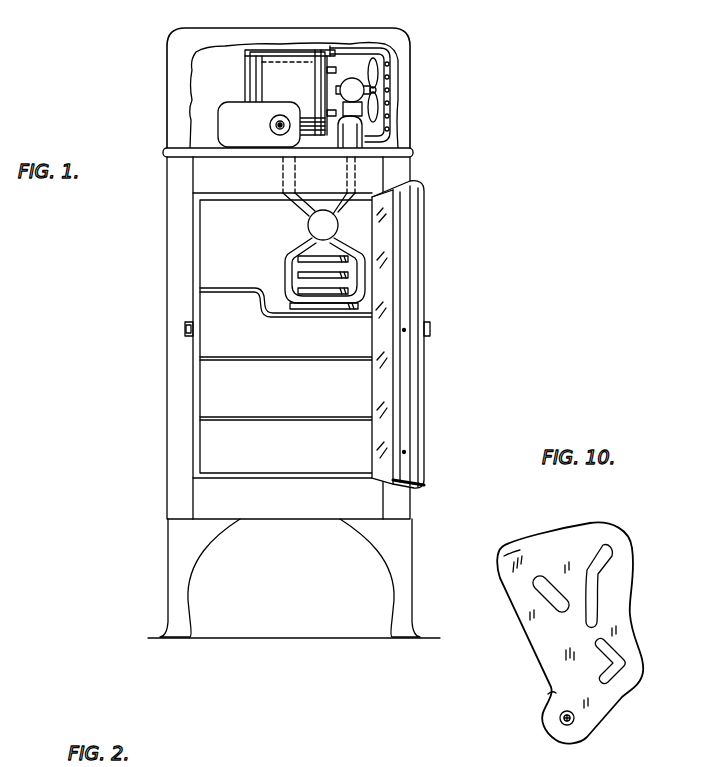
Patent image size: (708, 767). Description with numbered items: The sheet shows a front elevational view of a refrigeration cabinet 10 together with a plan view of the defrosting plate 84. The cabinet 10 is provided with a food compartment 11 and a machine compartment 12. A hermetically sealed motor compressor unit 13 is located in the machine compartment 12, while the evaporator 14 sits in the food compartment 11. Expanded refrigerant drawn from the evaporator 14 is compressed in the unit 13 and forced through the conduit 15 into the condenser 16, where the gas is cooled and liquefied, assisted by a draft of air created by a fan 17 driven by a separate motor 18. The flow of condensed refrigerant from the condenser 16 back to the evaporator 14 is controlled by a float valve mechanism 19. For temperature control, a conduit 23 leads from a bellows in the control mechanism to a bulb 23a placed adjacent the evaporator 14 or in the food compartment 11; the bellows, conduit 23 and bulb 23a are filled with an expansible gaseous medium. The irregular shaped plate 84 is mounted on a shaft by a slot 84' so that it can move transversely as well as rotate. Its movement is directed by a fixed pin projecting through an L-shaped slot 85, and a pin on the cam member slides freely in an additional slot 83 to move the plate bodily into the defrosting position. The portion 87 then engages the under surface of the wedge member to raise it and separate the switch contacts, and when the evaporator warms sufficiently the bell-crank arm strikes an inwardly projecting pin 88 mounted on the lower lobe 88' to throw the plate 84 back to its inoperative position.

In FIG. 1, the refrigeration cabinet 10 is at (175, 257).
In FIG. 1, the food compartment 11 is at (207, 334).
In FIG. 1, the machine compartment 12 is at (200, 82).
In FIG. 1, the motor compressor unit 13 is at (290, 96).
In FIG. 1, the evaporator 14 is at (360, 270).
In FIG. 1, the conduit 15 is at (370, 43).
In FIG. 1, the condenser 16 is at (391, 66).
In FIG. 1, the fan 17 is at (377, 113).
In FIG. 1, the motor 18 is at (353, 80).
In FIG. 1, the float valve mechanism 19 is at (364, 137).
In FIG. 1, the conduit 23 is at (292, 200).
In FIG. 1, the bulb 23a is at (290, 241).
In FIG. 10, the slot 83 is at (609, 557).
In FIG. 10, the plate 84 is at (581, 632).
In FIG. 10, the slot 84' is at (520, 603).
In FIG. 10, the L-shaped slot 85 is at (618, 666).
In FIG. 10, the portion 87 is at (512, 558).
In FIG. 10, the pin 88 is at (595, 733).
In FIG. 10, the lower lobe 88' is at (529, 699).